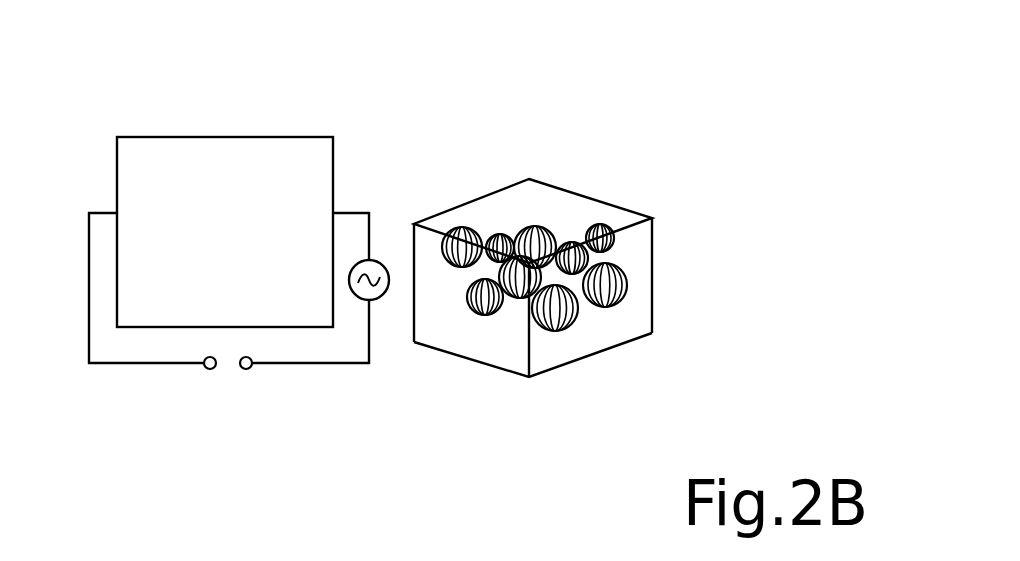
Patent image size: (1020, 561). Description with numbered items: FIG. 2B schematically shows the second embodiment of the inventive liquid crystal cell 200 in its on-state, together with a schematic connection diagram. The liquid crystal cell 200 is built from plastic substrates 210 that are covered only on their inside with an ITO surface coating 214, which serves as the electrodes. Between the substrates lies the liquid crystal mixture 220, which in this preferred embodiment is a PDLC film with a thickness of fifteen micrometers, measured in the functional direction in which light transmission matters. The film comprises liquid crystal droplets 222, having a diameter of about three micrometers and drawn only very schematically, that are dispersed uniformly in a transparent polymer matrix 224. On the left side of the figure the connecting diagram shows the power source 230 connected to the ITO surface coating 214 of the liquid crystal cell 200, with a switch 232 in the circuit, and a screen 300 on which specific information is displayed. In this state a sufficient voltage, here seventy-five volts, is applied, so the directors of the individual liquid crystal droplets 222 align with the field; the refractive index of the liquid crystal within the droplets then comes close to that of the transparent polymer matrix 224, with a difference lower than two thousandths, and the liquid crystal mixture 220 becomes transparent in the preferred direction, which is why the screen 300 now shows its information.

The liquid crystal cell 200 is at (621, 250).
The plastic substrates 210 is at (545, 188).
The ITO surface coating 214 is at (647, 227).
The liquid crystal mixture 220 is at (465, 326).
The liquid crystal droplets 222 is at (600, 282).
The transparent polymer matrix 224 is at (632, 258).
The power source 230 is at (383, 262).
The switch 232 is at (237, 385).
The screen 300 is at (195, 145).